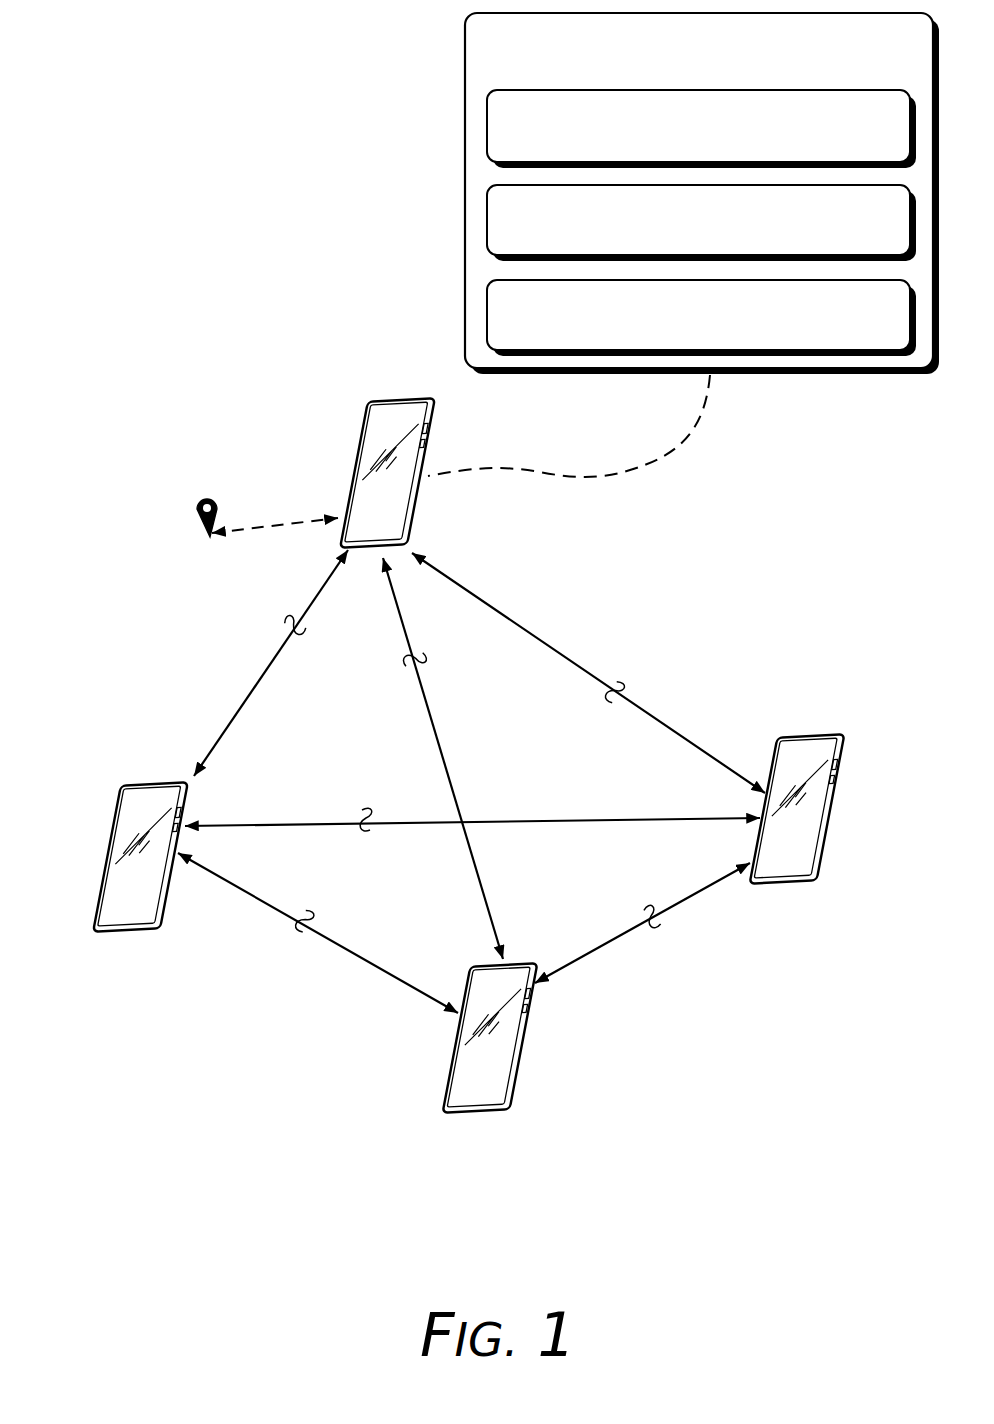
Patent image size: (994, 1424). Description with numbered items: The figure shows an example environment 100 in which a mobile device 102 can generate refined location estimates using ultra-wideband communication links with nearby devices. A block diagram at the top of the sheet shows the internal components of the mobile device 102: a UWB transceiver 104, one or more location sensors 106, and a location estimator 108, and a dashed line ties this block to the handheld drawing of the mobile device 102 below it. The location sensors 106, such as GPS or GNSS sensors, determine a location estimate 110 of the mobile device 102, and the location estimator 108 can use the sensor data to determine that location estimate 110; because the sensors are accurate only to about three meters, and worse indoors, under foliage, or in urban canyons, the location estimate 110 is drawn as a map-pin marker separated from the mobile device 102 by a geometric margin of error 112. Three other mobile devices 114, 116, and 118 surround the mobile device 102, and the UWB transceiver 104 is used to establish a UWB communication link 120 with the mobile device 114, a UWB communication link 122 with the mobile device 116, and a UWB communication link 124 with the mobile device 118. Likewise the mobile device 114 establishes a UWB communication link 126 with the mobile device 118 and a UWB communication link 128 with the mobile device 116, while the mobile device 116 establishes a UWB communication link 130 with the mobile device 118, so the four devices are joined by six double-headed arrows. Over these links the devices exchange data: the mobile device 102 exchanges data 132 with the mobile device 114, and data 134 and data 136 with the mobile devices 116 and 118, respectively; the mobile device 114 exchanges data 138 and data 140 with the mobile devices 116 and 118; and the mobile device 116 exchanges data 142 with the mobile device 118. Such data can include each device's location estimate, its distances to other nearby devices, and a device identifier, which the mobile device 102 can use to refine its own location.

The environment 100 is at (210, 45).
The mobile device 102 is at (680, 76).
The UWB transceiver 104 is at (681, 154).
The location sensors 106 is at (681, 247).
The location estimator 108 is at (681, 342).
The location estimate 110 is at (197, 500).
The geometric margin of error 112 is at (282, 526).
The mobile device 114 is at (123, 952).
The mobile device 116 is at (427, 1112).
The mobile device 118 is at (847, 849).
The UWB communication link 120 is at (236, 720).
The UWB communication link 122 is at (438, 745).
The UWB communication link 124 is at (567, 660).
The UWB communication link 126 is at (628, 820).
The UWB communication link 128 is at (352, 960).
The UWB communication link 130 is at (637, 928).
The data 132 is at (290, 625).
The data 134 is at (408, 668).
The data 136 is at (608, 703).
The data 138 is at (366, 838).
The data 140 is at (297, 932).
The data 142 is at (664, 936).